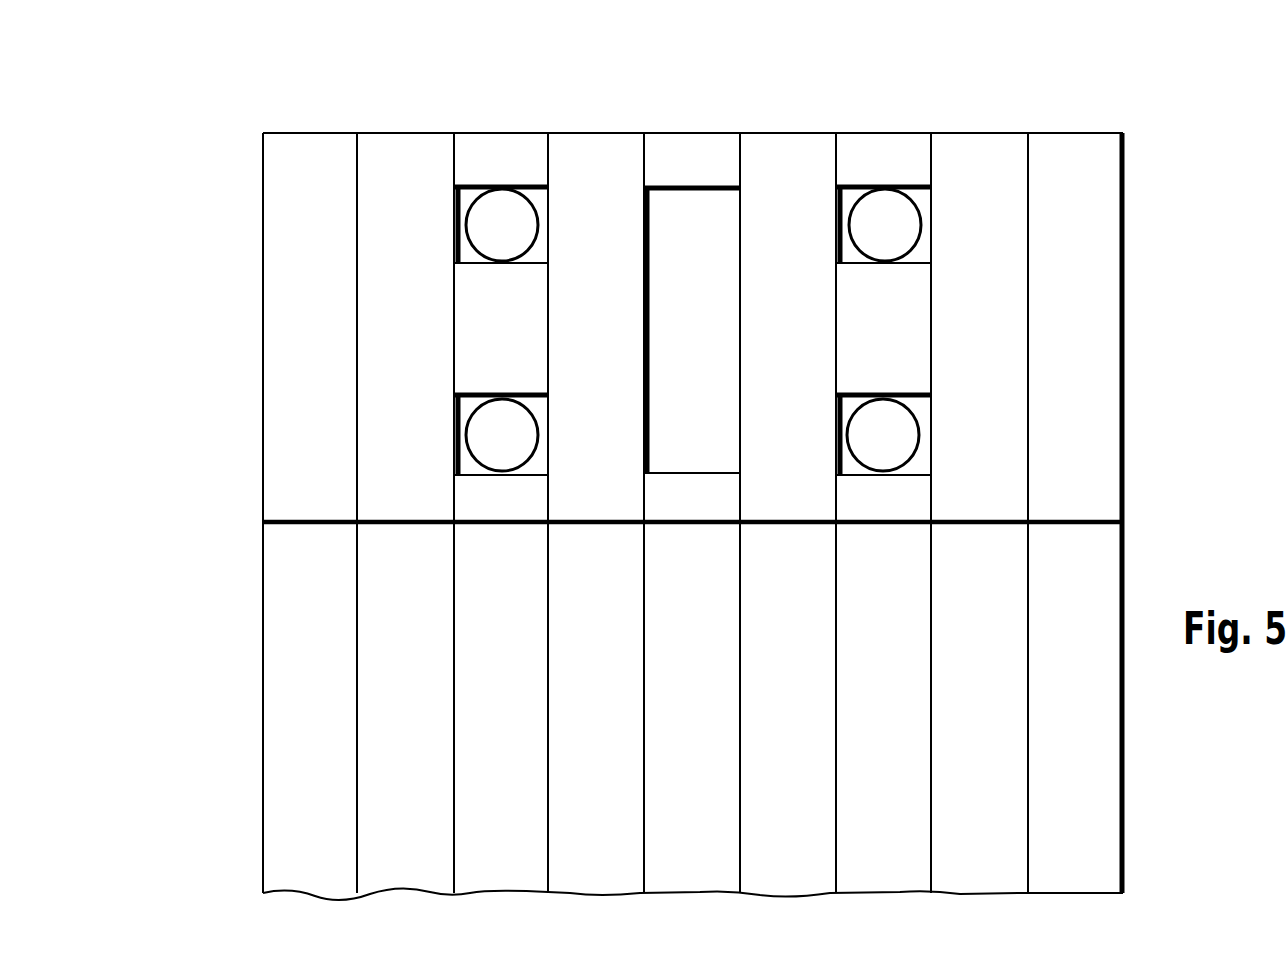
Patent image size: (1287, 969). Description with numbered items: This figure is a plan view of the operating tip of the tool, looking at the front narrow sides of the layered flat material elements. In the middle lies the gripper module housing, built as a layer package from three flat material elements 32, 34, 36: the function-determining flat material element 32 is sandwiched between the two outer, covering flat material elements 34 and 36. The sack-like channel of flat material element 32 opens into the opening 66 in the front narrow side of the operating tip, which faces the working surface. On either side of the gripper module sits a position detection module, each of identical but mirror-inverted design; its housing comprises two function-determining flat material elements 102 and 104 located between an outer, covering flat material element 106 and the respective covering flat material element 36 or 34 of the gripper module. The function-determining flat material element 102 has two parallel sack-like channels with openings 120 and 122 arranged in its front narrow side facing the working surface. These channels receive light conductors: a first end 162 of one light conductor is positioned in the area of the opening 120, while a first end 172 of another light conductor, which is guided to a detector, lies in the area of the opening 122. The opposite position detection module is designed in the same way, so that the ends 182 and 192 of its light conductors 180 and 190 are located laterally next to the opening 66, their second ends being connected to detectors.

The flat material element 32 is at (685, 497).
The flat material element 34 is at (588, 503).
The flat material element 36 is at (781, 495).
The opening 66 is at (685, 195).
The function-determining flat material element 102 is at (877, 498).
The function-determining flat material element 104 is at (978, 472).
The outer, covering flat material element 106 is at (1078, 476).
The opening 120 is at (925, 200).
The opening 122 is at (917, 396).
The first end 162 is at (880, 217).
The first end 172 is at (905, 432).
The light conductor 180 is at (473, 210).
The end 182 is at (481, 228).
The light conductor 190 is at (478, 408).
The end 192 is at (497, 440).